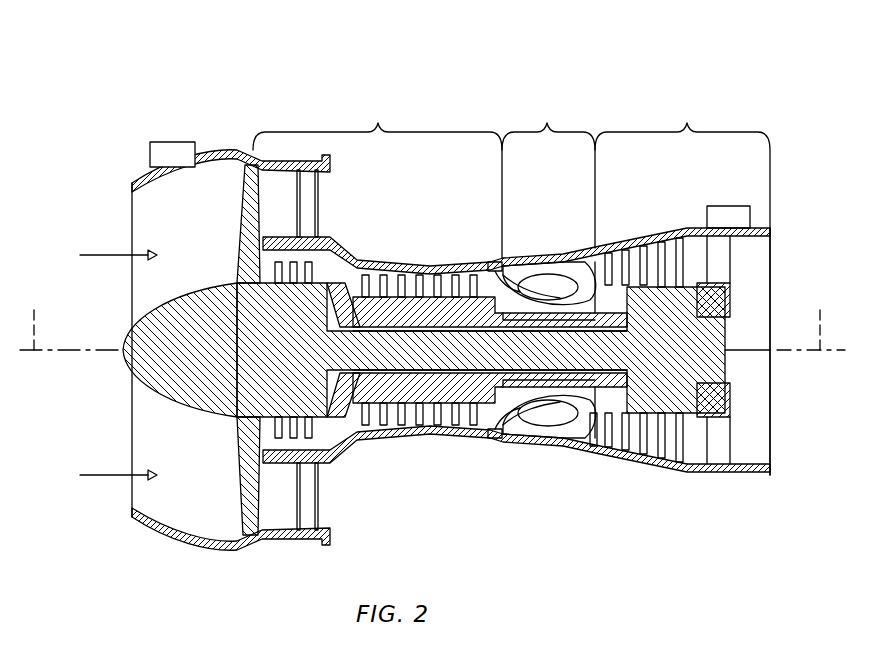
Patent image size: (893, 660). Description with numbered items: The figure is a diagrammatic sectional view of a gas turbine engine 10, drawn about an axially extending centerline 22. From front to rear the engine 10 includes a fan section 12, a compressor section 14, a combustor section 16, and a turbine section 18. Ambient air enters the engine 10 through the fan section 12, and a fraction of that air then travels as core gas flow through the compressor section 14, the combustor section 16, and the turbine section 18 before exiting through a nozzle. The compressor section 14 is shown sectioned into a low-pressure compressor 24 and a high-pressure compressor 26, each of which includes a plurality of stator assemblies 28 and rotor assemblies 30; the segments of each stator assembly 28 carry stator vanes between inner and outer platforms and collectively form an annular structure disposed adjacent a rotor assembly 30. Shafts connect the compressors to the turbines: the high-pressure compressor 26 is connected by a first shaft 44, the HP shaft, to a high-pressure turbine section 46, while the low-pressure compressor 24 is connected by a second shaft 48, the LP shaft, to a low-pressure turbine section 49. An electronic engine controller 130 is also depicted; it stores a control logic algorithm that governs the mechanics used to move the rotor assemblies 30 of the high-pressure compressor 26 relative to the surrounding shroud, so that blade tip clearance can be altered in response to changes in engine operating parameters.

The gas turbine engine 10 is at (143, 130).
The fan section 12 is at (240, 190).
The compressor section 14 is at (377, 176).
The combustor section 16 is at (548, 171).
The turbine section 18 is at (682, 275).
The centerline 22 is at (431, 316).
The low-pressure compressor 24 is at (323, 248).
The high-pressure compressor 26 is at (395, 440).
The stator assembly 28 is at (665, 245).
The rotor assembly 30 is at (474, 426).
The first shaft 44 is at (524, 432).
The high-pressure turbine section 46 is at (605, 454).
The second shaft 48 is at (565, 432).
The low-pressure turbine section 49 is at (658, 373).
The electronic engine controller 130 is at (170, 145).